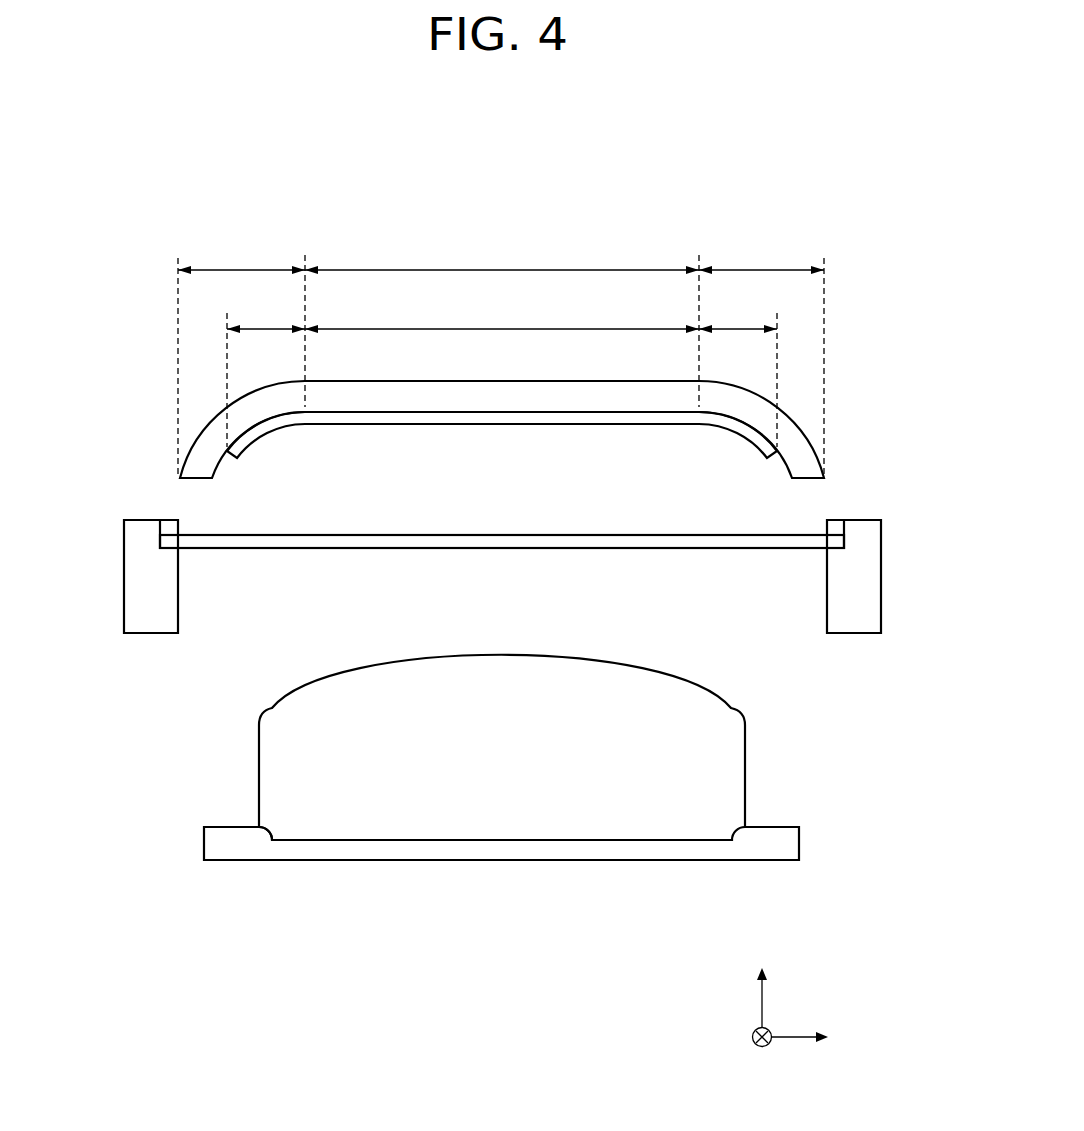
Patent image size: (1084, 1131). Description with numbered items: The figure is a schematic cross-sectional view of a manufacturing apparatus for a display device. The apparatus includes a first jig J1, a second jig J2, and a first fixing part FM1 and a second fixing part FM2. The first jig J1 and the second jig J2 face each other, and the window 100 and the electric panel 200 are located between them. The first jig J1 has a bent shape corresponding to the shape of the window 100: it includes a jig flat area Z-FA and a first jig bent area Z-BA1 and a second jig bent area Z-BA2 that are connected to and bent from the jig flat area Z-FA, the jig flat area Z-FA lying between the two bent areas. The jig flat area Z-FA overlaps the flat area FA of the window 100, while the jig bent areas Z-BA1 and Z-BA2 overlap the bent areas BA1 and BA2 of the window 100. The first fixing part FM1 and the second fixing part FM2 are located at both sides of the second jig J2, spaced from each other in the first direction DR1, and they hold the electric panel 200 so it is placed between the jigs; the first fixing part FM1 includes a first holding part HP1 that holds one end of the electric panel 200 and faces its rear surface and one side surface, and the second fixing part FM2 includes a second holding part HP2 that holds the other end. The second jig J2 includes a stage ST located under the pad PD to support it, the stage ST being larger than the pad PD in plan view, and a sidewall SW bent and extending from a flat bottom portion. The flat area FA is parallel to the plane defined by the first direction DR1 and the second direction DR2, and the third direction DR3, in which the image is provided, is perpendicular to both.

The first jig J1 is at (803, 430).
The window 100 is at (727, 429).
The first jig bent area Z-BA1 is at (241, 359).
The jig flat area Z-FA is at (502, 257).
The second jig bent area Z-BA2 is at (761, 359).
The first bent area BA1 is at (266, 373).
The flat area FA is at (502, 316).
The second bent area BA2 is at (738, 373).
The first fixing part FM1 is at (137, 593).
The second fixing part FM2 is at (868, 593).
The first holding part HP1 is at (163, 529).
The second holding part HP2 is at (842, 529).
The electric panel 200 is at (245, 535).
The pad PD is at (268, 768).
The stage ST is at (502, 848).
The sidewall SW is at (277, 826).
The second jig J2 is at (827, 783).
The first direction DR1 is at (818, 1039).
The second direction DR2 is at (765, 1055).
The third direction DR3 is at (761, 983).